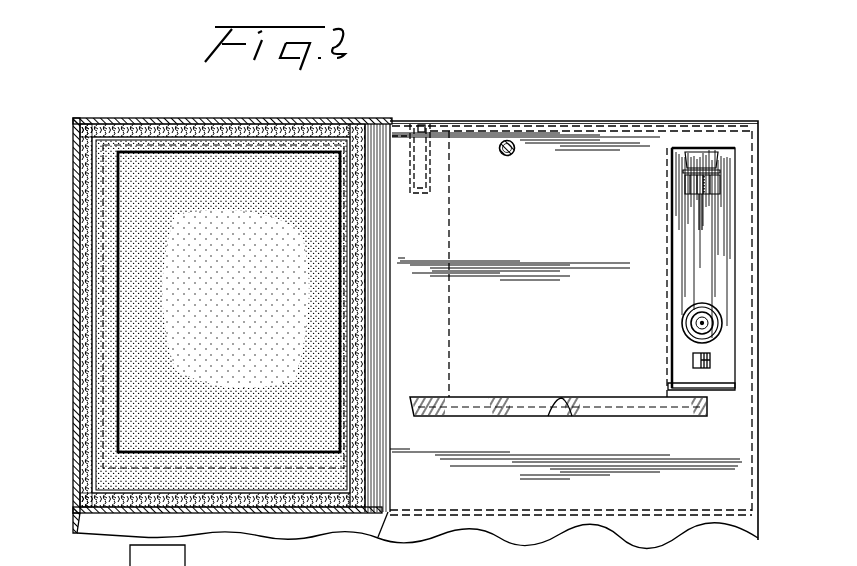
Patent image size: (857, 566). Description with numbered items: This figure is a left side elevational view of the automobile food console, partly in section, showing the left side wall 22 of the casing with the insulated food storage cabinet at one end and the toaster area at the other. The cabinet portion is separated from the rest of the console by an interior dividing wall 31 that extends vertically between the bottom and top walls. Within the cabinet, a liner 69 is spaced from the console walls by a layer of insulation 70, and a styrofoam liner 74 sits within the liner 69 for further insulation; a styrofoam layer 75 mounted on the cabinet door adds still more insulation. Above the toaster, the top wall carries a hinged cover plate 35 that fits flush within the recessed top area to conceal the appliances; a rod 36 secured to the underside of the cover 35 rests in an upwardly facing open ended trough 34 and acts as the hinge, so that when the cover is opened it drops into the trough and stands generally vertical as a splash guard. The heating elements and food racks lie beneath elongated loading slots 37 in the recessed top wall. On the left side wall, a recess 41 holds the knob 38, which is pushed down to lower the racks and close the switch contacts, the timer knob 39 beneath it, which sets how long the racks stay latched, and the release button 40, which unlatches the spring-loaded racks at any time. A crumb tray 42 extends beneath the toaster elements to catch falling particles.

The left side wall 22 is at (725, 485).
The interior dividing wall 31 is at (366, 476).
The trough 34 is at (449, 158).
The hinged cover plate 35 is at (587, 125).
The rod 36 is at (422, 168).
The loading slots 37 is at (668, 308).
The knob 38 is at (718, 158).
The knob 39 is at (708, 322).
The release button 40 is at (712, 358).
The recess 41 is at (730, 248).
The crumb tray 42 is at (708, 408).
The liner 69 is at (82, 458).
The insulation 70 is at (86, 330).
The styrofoam liner 74 is at (110, 252).
The styrofoam layer 75 is at (140, 212).